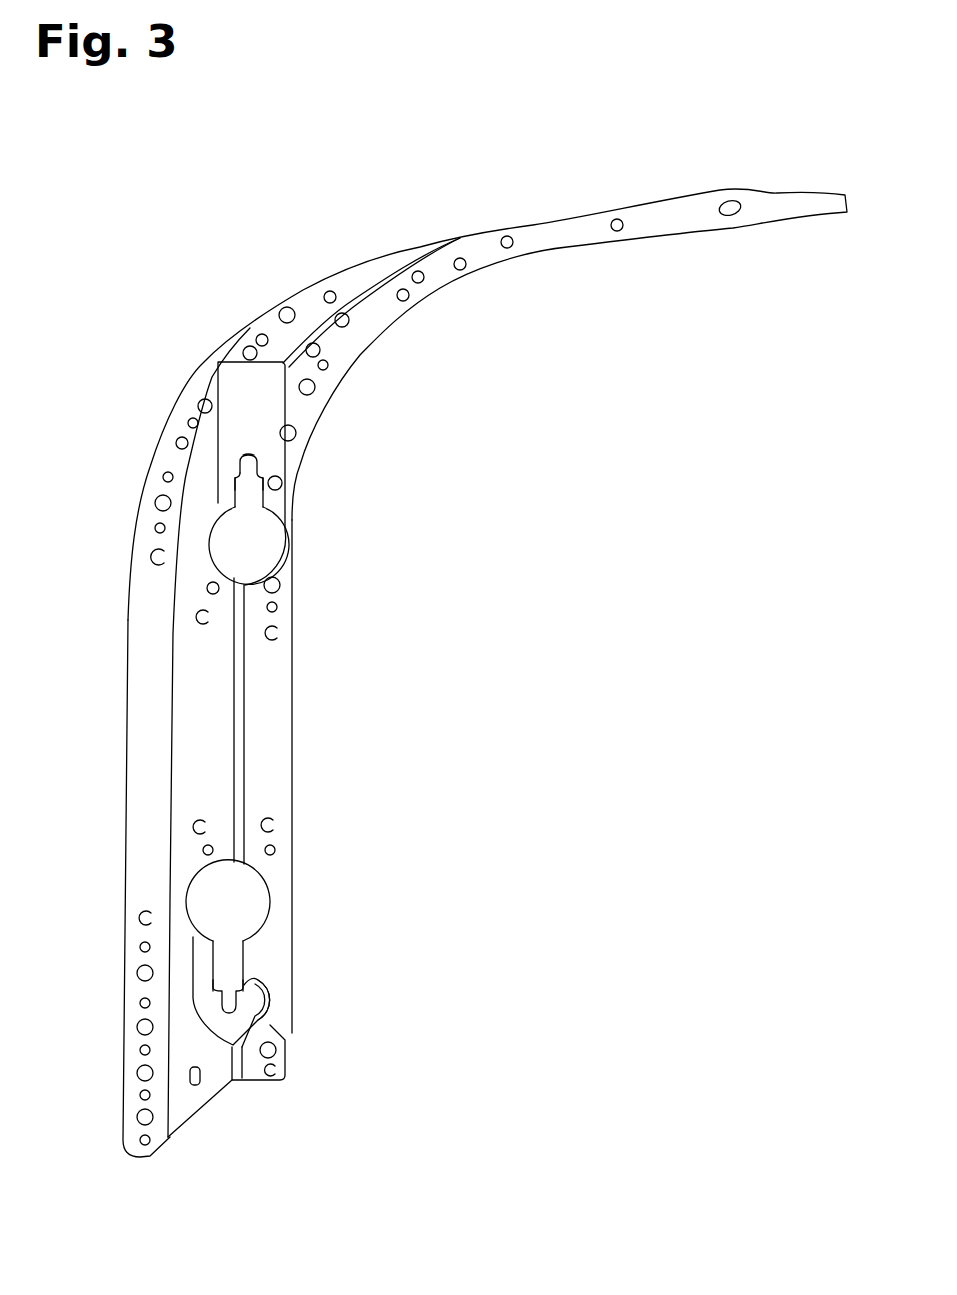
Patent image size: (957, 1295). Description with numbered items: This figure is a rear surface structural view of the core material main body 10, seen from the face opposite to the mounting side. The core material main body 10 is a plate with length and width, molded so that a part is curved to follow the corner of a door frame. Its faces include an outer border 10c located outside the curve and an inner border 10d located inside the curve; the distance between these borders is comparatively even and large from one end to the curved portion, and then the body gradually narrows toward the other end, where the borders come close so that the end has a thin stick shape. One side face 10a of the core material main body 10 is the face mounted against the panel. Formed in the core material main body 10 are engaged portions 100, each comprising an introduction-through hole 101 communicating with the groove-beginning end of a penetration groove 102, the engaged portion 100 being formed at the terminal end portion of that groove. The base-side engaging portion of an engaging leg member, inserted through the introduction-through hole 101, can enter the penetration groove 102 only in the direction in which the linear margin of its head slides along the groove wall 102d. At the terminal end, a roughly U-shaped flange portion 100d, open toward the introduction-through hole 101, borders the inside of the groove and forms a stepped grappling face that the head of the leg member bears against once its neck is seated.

The core material main body 10 is at (403, 222).
The one side face 10a is at (276, 748).
The outer border 10c is at (128, 607).
The inner border 10d is at (292, 685).
The engaged portion 100 is at (238, 423).
The flange portion 100d is at (258, 462).
The introduction-through hole 101 is at (252, 543).
The penetration groove 102 is at (250, 492).
The groove wall 102d is at (235, 490).